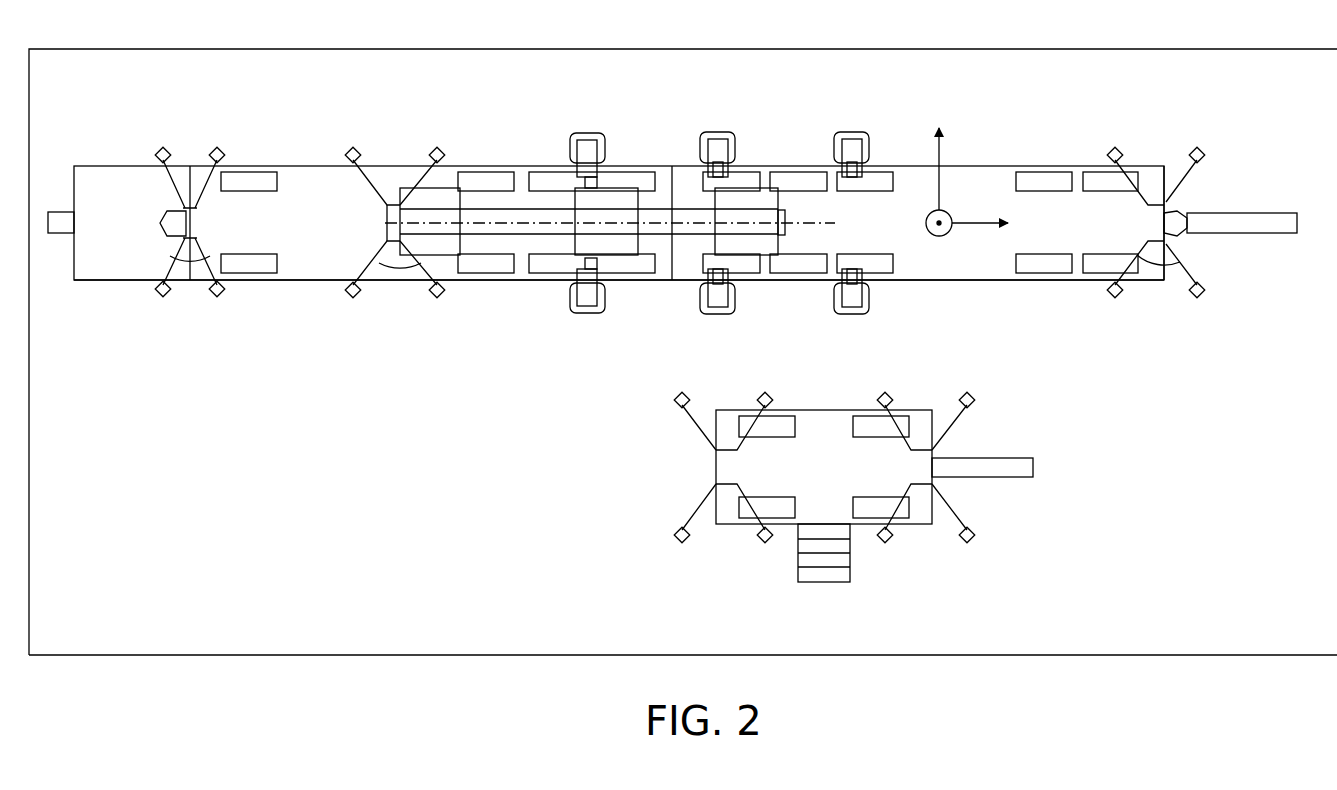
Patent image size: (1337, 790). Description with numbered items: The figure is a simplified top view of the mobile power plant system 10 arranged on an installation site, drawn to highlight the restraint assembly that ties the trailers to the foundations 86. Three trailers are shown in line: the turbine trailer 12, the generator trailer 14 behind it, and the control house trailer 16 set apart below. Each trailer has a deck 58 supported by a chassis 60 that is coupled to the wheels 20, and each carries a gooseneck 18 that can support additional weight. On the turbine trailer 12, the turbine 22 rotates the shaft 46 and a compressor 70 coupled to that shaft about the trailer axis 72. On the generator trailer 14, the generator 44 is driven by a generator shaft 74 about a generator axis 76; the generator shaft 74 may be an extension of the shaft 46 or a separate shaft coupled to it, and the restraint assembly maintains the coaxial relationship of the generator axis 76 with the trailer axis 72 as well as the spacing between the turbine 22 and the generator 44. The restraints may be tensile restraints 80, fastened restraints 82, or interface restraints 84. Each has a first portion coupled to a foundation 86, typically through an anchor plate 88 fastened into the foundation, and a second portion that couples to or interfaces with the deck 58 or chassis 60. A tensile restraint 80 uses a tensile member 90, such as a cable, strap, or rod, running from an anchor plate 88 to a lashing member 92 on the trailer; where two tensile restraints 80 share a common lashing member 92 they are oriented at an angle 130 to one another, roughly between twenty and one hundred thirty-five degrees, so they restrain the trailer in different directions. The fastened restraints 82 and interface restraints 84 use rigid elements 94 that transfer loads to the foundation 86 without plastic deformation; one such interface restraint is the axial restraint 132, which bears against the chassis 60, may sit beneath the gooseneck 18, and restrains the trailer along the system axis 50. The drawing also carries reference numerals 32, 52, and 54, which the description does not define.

The mobile power plant system 10 is at (340, 472).
The turbine trailer 12 is at (308, 402).
The generator trailer 14 is at (1065, 318).
The control house trailer 16 is at (924, 585).
The gooseneck 18 is at (53, 212).
The wheels 20 is at (251, 253).
The turbine 22 is at (614, 168).
The front end 32 is at (132, 166).
The generator 44 is at (763, 172).
The shaft 46 is at (517, 237).
The system axis 50 is at (1008, 215).
The lateral axis arrow 52 is at (940, 152).
The vertical axis 54 is at (945, 238).
The deck 58 is at (318, 262).
The chassis 60 is at (937, 280).
The compressor 70 is at (446, 188).
The trailer axis 72 is at (392, 223).
The generator shaft 74 is at (780, 213).
The generator axis 76 is at (810, 223).
The tensile restraint 80 is at (1172, 150).
The fastened restraint 82 is at (566, 110).
The interface restraint 84 is at (148, 227).
The foundation 86 is at (325, 49).
The anchor plate 88 is at (217, 155).
The tensile member 90 is at (170, 185).
The lashing member 92 is at (195, 225).
The rigid element 94 is at (572, 150).
The angle 130 is at (180, 262).
The axial restraint 132 is at (684, 203).